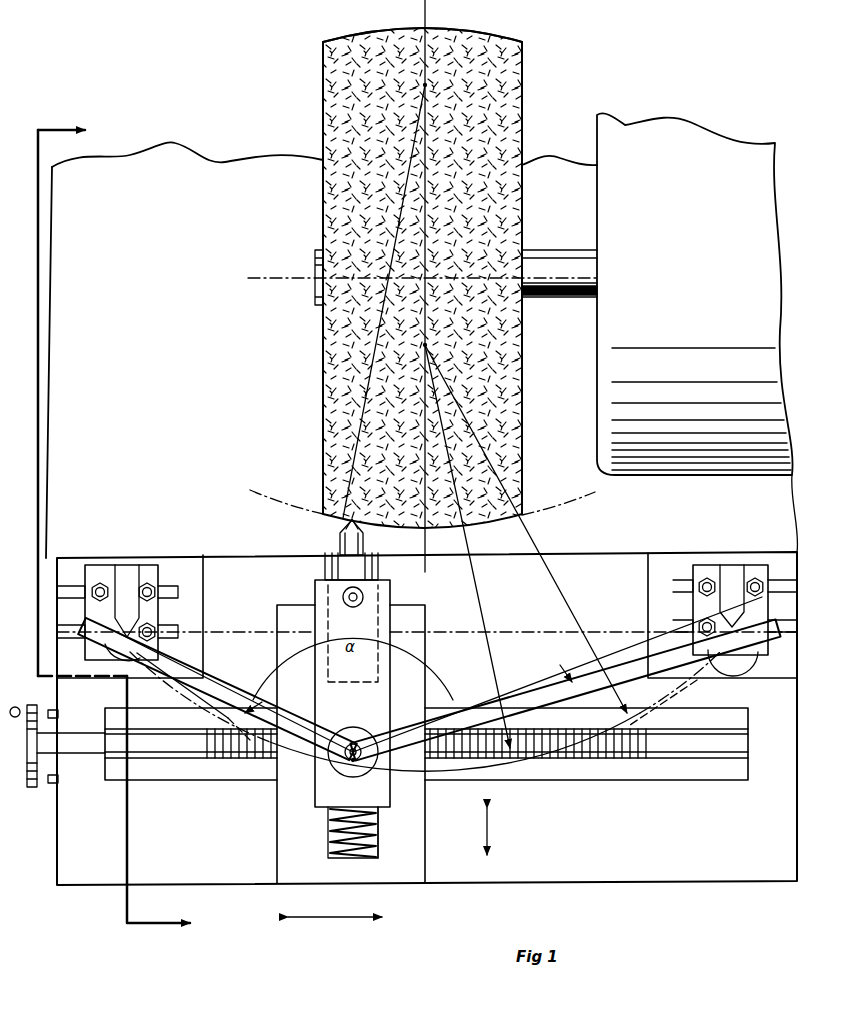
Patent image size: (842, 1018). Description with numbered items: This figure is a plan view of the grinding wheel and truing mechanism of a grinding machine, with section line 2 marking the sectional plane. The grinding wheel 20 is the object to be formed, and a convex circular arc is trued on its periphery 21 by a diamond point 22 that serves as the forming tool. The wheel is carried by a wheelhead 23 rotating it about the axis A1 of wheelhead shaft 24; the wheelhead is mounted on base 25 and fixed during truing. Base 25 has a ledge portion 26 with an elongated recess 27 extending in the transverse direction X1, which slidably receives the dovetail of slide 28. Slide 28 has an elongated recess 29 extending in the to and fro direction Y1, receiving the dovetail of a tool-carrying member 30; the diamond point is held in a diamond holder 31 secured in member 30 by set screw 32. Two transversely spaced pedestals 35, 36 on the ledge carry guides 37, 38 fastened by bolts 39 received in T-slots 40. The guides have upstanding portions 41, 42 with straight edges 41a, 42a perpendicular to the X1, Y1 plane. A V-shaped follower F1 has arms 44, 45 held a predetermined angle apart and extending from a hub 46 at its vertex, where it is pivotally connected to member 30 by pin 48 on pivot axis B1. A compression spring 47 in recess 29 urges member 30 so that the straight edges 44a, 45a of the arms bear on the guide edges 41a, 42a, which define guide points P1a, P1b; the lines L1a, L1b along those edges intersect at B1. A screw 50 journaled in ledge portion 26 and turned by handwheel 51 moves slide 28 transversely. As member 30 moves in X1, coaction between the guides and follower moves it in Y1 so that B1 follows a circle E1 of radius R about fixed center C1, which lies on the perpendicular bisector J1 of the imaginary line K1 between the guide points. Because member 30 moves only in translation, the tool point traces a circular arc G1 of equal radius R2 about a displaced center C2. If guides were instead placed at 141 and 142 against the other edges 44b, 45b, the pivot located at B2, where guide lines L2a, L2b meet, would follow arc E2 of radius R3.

The section line 2- 2 is at (114, 532).
The grinding wheel 20 is at (322, 205).
The periphery 21 is at (333, 40).
The diamond point 22 is at (340, 522).
The wheelhead 23 is at (650, 478).
The wheelhead shaft 24 is at (540, 298).
The base 25 is at (183, 412).
The ledge portion 26 is at (622, 854).
The elongated recess 27 is at (604, 780).
The slide 28 is at (277, 851).
The elongated recess 29 is at (378, 851).
The tool-carrying member 30 is at (390, 580).
The diamond holder 31 is at (365, 544).
The set screw 32 is at (343, 597).
The pedestal 35 is at (203, 614).
The pedestal 36 is at (648, 588).
The guide 37 is at (178, 552).
The guide 38 is at (697, 560).
The bolts 39 is at (105, 580).
The T-slots 40 is at (225, 530).
The upstanding portion 41 is at (132, 575).
The straight line edge 41a is at (92, 640).
The upstanding portion 42 is at (742, 565).
The straight line edge 42a is at (748, 655).
The arm 44 is at (215, 685).
The straight edge 44a is at (240, 700).
The edge 44b is at (200, 698).
The arm 45 is at (458, 713).
The straight edge 45a is at (538, 700).
The edge 45b is at (538, 712).
The hub 46 is at (352, 777).
The spring 47 is at (328, 851).
The pin 48 is at (354, 744).
The screw 50 is at (222, 762).
The handwheel 51 is at (36, 788).
The alternative guide position 141 is at (127, 660).
The alternative guide position 142 is at (725, 660).
The axis A1 is at (255, 278).
The pivot axis B1 is at (355, 742).
The pivot axis B2 is at (360, 770).
The center C1 is at (427, 345).
The center C2 is at (427, 85).
The circle E1 is at (640, 700).
The circular arc E2 is at (646, 712).
The V-shaped follower F1 is at (572, 680).
The circular arc G1 is at (306, 508).
The perpendicular bisector J1 is at (426, 15).
The imaginary line K1 is at (462, 620).
The straight line L1a is at (335, 745).
The straight line L1b is at (370, 745).
The guide line L2a is at (335, 768).
The guide line L2b is at (375, 770).
The guide point P1a is at (140, 625).
The guide point P1b is at (720, 620).
The radius R is at (484, 618).
The radius R2 is at (398, 240).
The radius R3 is at (538, 541).
The transverse direction X1 is at (322, 917).
The to and fro direction Y1 is at (510, 843).